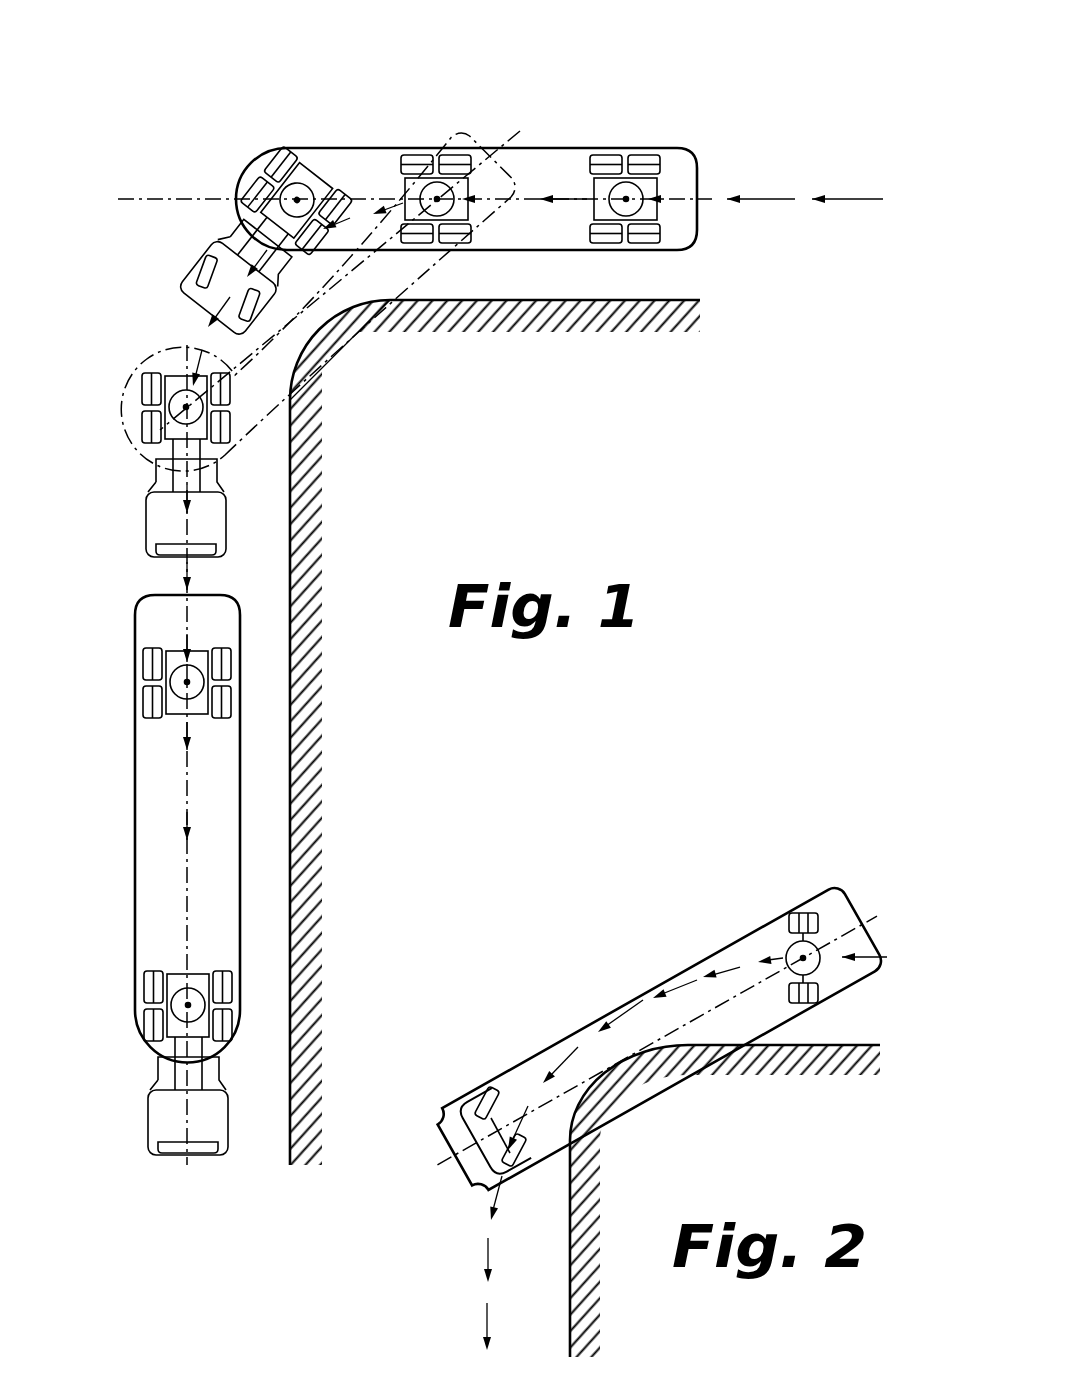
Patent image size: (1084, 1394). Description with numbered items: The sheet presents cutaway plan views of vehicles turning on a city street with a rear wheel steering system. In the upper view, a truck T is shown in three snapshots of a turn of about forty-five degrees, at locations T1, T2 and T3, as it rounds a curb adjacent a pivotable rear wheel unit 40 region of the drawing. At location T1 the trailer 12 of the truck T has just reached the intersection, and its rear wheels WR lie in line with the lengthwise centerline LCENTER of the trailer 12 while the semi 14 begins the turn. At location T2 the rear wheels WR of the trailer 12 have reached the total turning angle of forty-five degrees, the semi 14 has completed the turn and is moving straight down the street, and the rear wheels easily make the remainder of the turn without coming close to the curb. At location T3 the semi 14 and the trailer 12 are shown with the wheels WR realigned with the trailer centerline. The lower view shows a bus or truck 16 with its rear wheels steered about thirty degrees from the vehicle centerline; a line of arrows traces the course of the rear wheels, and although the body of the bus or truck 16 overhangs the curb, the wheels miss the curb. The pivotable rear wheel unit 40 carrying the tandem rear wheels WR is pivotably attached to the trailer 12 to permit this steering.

In FIG. 1, the trailer 12 is at (553, 162).
In FIG. 1, the semi 14 is at (145, 523).
In FIG. 2, the bus or truck 16 is at (730, 953).
In FIG. 1, the pivotable rear wheel unit 40 is at (262, 652).
In FIG. 1, the truck T is at (685, 170).
In FIG. 1, the rear wheels WR is at (647, 158).
In FIG. 1, the lengthwise centerline LCENTER is at (192, 199).
In FIG. 1, the first location T1 is at (370, 92).
In FIG. 1, the second location T2 is at (102, 438).
In FIG. 1, the third location T3 is at (110, 782).